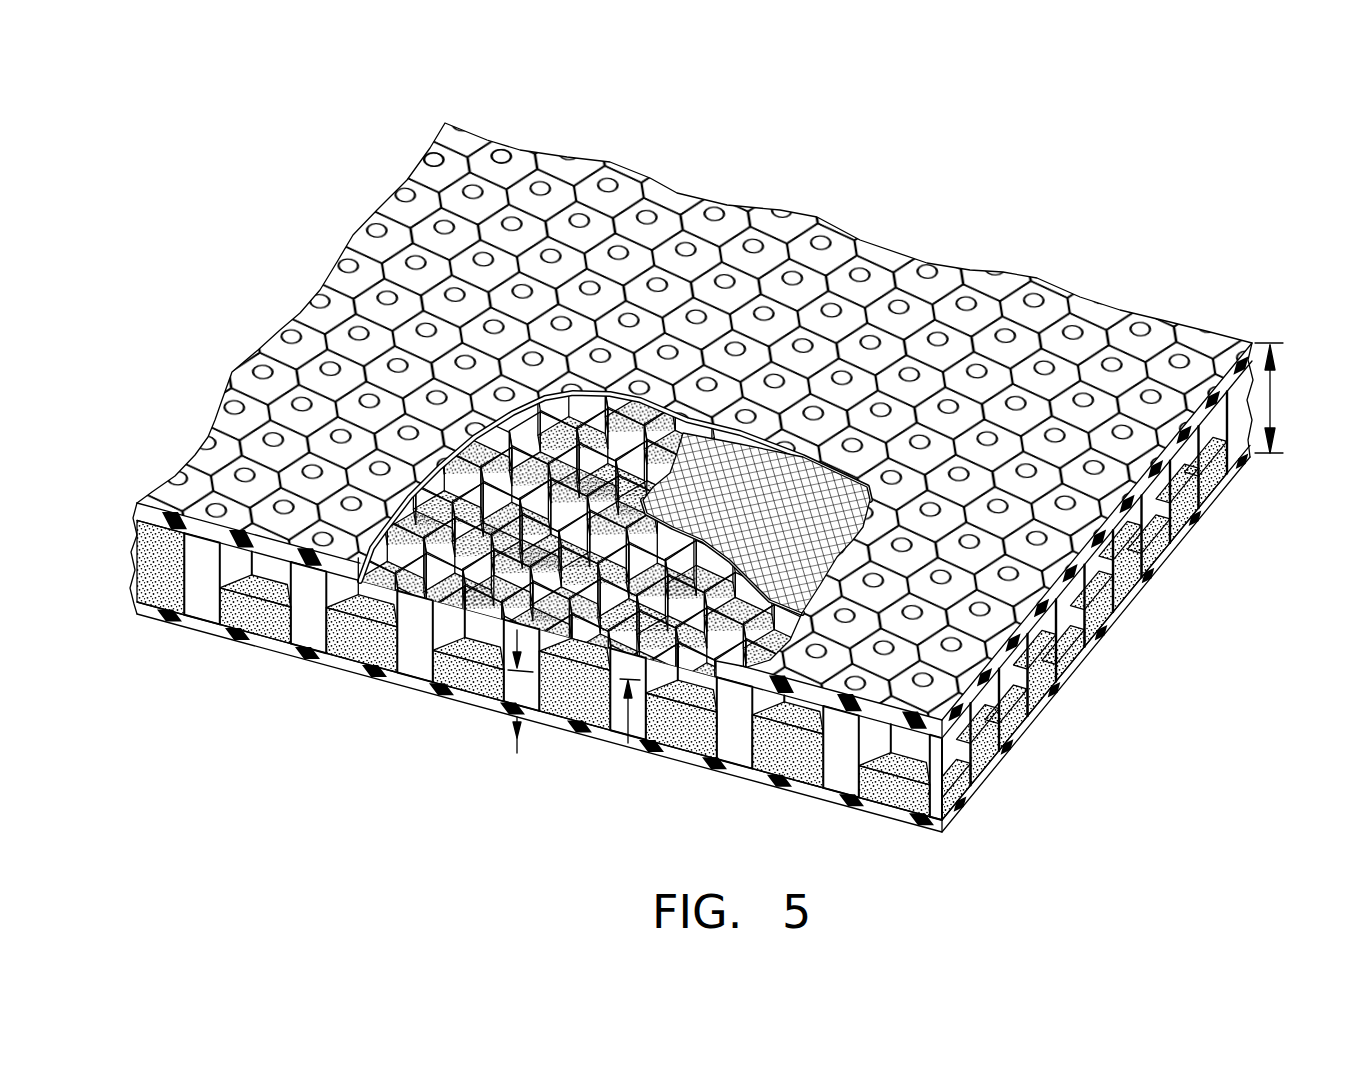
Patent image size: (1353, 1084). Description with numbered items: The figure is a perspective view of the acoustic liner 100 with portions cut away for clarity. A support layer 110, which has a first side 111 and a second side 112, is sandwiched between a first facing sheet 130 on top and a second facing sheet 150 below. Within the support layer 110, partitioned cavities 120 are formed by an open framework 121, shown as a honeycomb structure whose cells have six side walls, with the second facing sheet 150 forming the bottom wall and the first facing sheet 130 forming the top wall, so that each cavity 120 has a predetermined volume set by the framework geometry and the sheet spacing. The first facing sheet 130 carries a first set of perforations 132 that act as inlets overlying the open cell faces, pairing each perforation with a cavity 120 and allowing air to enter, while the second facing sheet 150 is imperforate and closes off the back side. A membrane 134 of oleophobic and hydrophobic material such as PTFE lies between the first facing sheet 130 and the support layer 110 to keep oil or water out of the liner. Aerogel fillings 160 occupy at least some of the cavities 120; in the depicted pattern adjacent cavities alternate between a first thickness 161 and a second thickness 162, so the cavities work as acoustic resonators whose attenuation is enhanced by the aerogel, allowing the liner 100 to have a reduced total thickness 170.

The acoustic liner 100 is at (323, 143).
The support layer 110 is at (131, 548).
The first side 111 is at (215, 530).
The second side 112 is at (137, 607).
The cavities 120 is at (560, 438).
The open framework 121 is at (415, 622).
The first facing sheet 130 is at (436, 152).
The first set of perforations 132 is at (498, 168).
The membrane 134 is at (770, 478).
The second facing sheet 150 is at (197, 632).
The aerogel fillings 160 is at (480, 672).
The first thickness 161 is at (516, 745).
The second thickness 162 is at (622, 747).
The total thickness 170 is at (1272, 398).